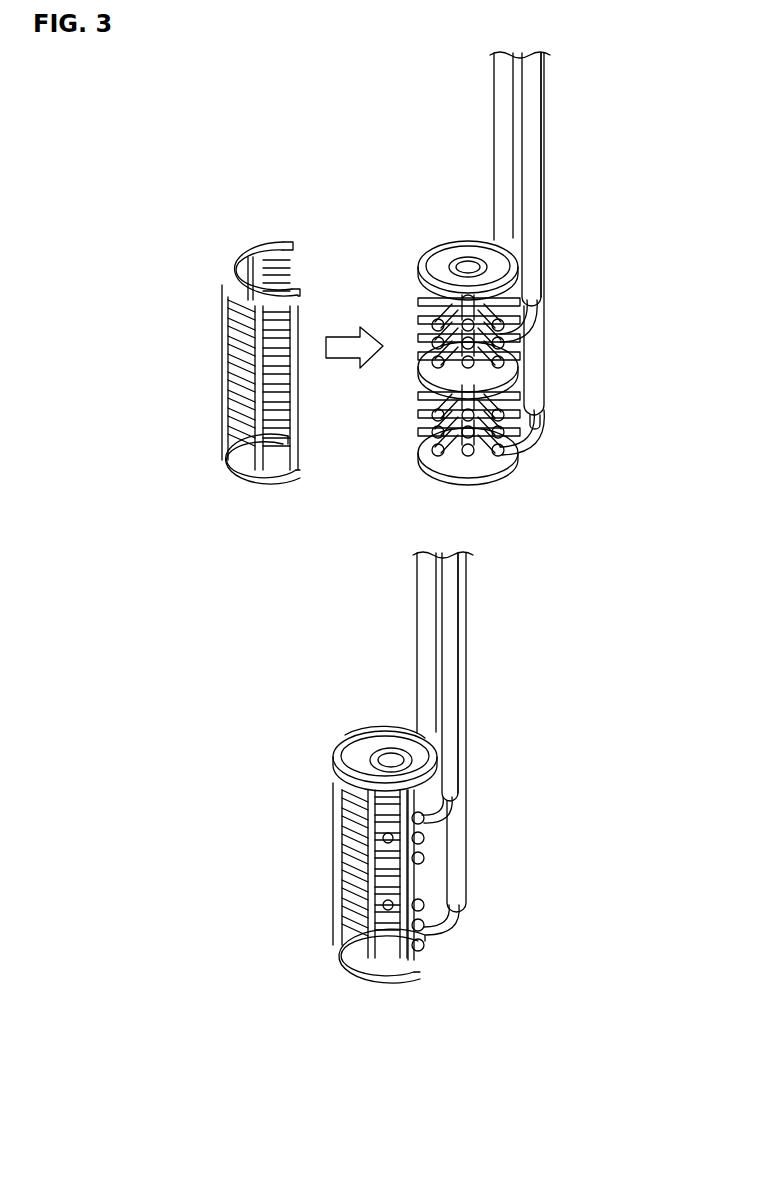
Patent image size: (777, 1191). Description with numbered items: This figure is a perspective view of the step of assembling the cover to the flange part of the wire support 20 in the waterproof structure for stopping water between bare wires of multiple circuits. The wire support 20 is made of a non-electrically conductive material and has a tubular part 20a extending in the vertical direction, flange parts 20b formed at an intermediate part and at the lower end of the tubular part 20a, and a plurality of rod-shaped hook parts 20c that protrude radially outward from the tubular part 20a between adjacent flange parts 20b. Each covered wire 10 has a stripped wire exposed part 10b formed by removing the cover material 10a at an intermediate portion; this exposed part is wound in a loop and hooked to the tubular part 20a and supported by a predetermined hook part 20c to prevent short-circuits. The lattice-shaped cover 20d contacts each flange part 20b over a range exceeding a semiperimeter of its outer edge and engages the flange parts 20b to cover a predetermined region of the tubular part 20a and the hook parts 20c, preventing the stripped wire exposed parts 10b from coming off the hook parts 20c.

The covered wire 10 is at (479, 493).
The cover material 10a is at (494, 152).
The stripped wire exposed part 10b is at (450, 807).
The wire support 20 is at (379, 634).
The tubular part 20a is at (482, 452).
The flange part 20b is at (426, 261).
The hook part 20c is at (500, 343).
The lattice-shaped cover 20d is at (228, 364).